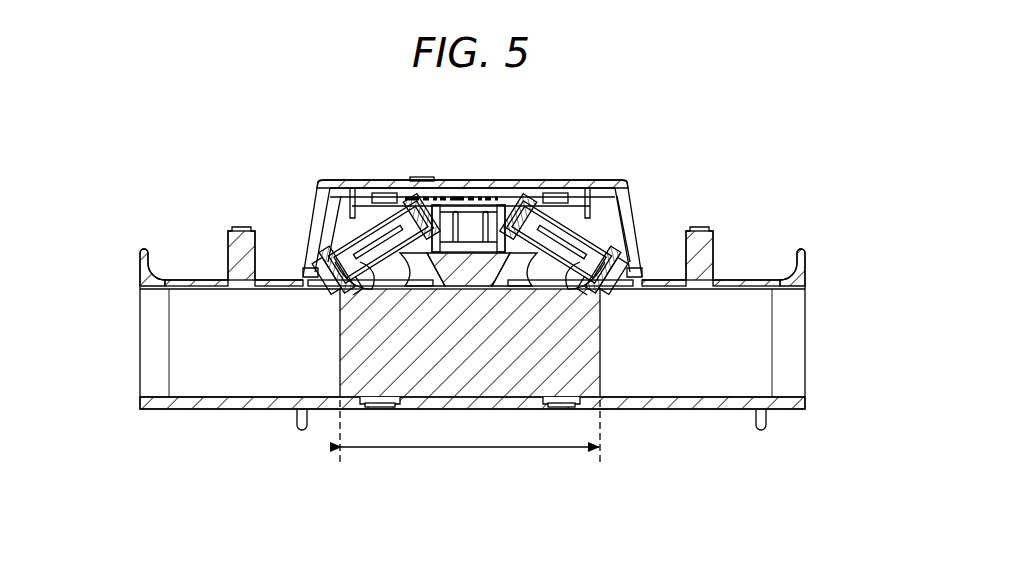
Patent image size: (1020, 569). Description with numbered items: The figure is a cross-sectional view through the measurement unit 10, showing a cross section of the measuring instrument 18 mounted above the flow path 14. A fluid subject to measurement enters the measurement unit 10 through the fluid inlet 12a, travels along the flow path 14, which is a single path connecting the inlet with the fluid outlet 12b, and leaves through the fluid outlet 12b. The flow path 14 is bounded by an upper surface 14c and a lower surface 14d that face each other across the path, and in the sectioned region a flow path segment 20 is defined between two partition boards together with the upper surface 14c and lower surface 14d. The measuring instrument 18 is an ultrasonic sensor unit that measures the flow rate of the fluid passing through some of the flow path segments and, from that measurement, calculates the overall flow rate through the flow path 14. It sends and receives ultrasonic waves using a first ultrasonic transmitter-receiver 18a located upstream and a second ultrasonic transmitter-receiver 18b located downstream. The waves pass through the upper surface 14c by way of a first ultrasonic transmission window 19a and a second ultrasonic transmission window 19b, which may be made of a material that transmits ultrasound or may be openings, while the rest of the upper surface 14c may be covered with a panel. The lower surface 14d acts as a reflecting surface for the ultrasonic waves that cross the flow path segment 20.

The measurement unit 10 is at (729, 167).
The fluid inlet 12a is at (139, 350).
The fluid outlet 12b is at (806, 300).
The flow path 14 is at (197, 330).
The upper surface 14c is at (335, 294).
The lower surface 14d is at (358, 400).
The measuring instrument 18 is at (478, 190).
The first ultrasonic transmitter-receiver 18a is at (389, 200).
The second ultrasonic transmitter-receiver 18b is at (545, 200).
The first ultrasonic transmission window 19a is at (341, 300).
The second ultrasonic transmission window 19b is at (572, 288).
The flow path segment 20 is at (470, 438).